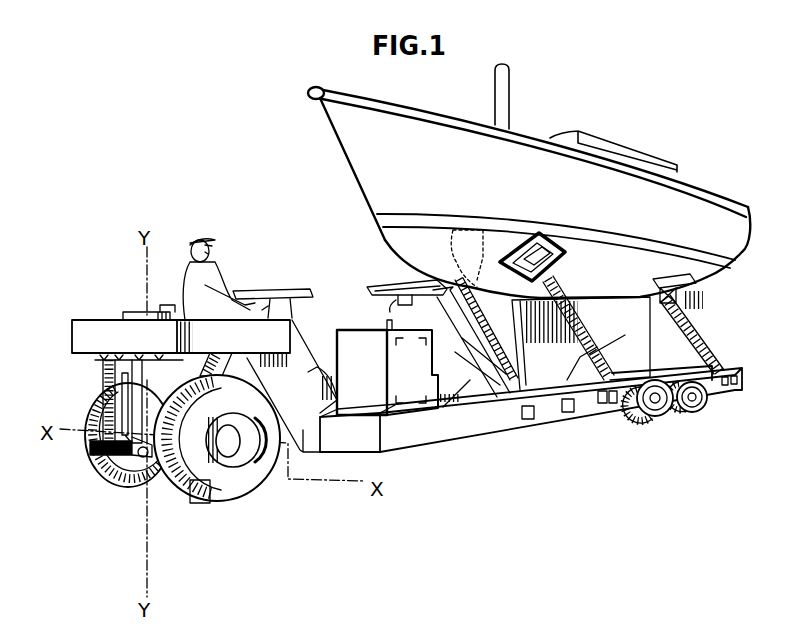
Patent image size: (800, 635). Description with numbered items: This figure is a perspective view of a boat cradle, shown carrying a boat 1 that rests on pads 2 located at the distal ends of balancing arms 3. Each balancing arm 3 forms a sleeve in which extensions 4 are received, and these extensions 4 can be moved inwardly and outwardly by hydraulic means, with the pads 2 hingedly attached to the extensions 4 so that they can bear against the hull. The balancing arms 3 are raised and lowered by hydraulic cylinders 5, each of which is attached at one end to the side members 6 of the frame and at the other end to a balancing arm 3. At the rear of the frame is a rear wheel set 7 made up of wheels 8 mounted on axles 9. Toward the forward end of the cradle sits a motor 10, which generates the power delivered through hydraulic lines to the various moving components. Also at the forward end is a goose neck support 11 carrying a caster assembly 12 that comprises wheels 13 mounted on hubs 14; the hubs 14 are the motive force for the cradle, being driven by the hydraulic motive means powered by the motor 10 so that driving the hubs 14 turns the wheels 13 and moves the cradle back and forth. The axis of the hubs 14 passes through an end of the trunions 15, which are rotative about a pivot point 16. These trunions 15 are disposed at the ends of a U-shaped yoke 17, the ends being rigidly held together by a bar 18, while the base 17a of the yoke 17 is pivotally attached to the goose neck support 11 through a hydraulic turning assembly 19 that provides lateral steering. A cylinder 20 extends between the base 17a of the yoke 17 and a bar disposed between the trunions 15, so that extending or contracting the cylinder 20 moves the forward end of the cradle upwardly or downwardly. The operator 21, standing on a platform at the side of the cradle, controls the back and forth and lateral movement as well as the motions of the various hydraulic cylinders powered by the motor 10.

The boat 1 is at (420, 134).
The pads 2 is at (289, 291).
The balancing arms 3 is at (486, 308).
The extensions 4 is at (450, 323).
The hydraulic cylinders 5 is at (462, 415).
The side members 6 is at (497, 428).
The rear wheel set 7 is at (691, 444).
The wheels 8 is at (672, 420).
The axles 9 is at (708, 400).
The motor 10 is at (423, 377).
The goose neck support 11 is at (200, 391).
The caster assembly 12 is at (175, 465).
The wheels 13 is at (127, 480).
The hubs 14 is at (240, 457).
The trunions 15 is at (200, 503).
The pivot point 16 is at (84, 462).
The U-shaped yoke 17 is at (100, 388).
The base 17a is at (97, 387).
The bar 18 is at (107, 482).
The hydraulic turning assembly 19 is at (157, 313).
The cylinder 20 is at (128, 402).
The operator 21 is at (215, 228).